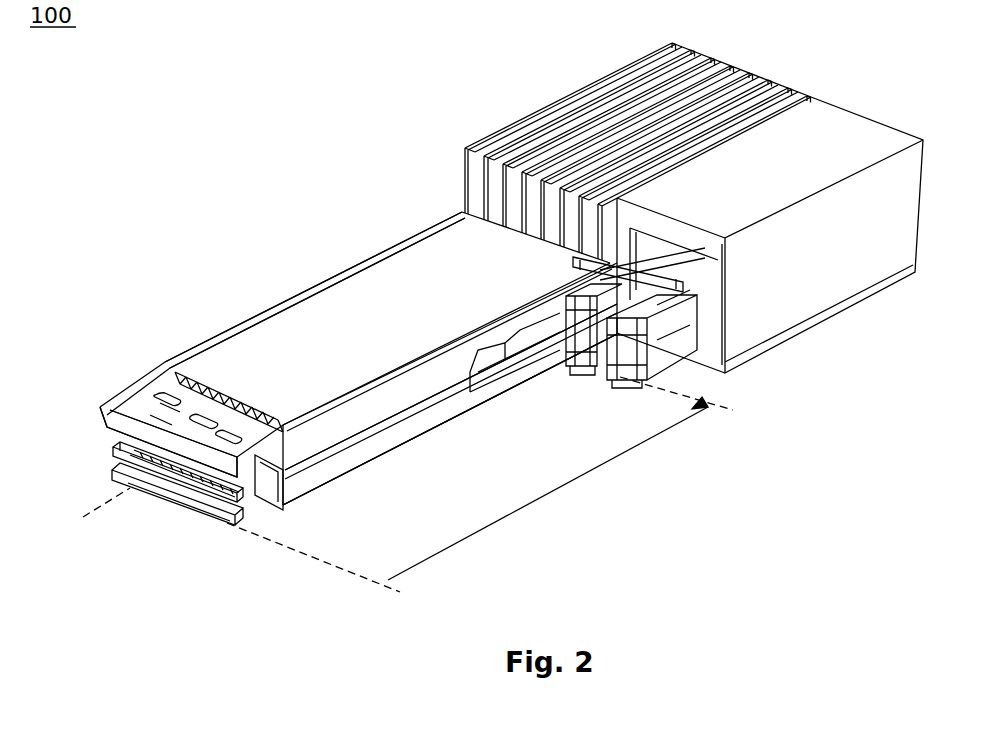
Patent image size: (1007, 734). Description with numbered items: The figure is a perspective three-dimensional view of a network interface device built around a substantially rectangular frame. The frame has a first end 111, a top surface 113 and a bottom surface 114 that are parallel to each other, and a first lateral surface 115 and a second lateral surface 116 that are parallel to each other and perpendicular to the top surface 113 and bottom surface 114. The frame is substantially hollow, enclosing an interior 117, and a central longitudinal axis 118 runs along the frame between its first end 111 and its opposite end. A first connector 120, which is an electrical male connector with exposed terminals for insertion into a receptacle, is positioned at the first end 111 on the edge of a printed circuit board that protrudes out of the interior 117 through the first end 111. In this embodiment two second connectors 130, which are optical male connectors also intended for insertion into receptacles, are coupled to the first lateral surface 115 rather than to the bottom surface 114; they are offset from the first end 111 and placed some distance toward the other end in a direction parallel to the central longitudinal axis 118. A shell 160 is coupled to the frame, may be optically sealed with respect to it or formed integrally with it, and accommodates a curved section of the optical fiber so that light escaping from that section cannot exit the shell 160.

The first end 111 is at (120, 418).
The top surface 113 is at (345, 292).
The bottom surface 114 is at (397, 450).
The first lateral surface 115 is at (410, 383).
The second lateral surface 116 is at (223, 328).
The hollow interior 117 is at (262, 480).
The central longitudinal axis 118 is at (103, 507).
The first connector 120 is at (163, 478).
The second connector 130 is at (678, 355).
The shell 160 is at (787, 270).